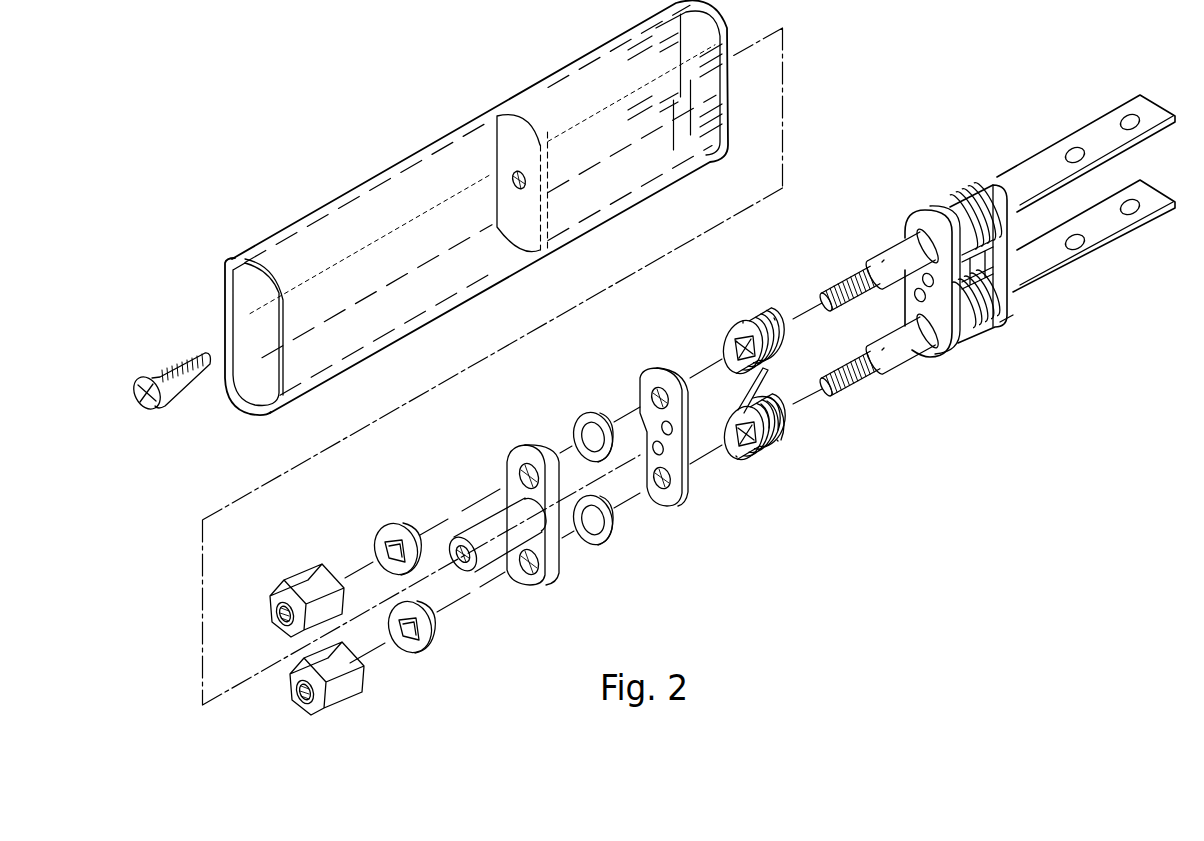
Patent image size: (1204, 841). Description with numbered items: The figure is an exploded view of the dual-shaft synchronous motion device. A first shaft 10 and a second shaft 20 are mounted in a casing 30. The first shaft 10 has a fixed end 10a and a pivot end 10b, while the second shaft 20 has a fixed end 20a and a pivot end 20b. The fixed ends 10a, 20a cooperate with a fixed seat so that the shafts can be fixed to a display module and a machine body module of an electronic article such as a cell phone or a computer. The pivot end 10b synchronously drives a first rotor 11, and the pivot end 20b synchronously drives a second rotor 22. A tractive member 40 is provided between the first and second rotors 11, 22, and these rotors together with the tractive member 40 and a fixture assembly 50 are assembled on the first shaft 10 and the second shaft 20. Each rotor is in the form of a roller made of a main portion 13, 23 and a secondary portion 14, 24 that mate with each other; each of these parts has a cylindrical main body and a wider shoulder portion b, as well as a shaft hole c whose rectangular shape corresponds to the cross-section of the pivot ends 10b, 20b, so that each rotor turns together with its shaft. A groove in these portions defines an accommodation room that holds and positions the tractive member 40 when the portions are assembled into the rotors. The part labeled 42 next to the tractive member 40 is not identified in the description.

The first shaft 10 is at (1002, 160).
The fixed end 10a is at (1090, 138).
The pivot end 10b is at (892, 253).
The first rotor 11 is at (738, 320).
The main portion 13 is at (700, 336).
The secondary portion 14 is at (810, 340).
The second shaft 20 is at (1030, 310).
The fixed end 20a is at (1084, 274).
The pivot end 20b is at (897, 353).
The second rotor 22 is at (752, 470).
The main portion 23 is at (725, 468).
The secondary portion 24 is at (810, 432).
The casing 30 is at (410, 143).
The tractive member 40 is at (745, 385).
The hook of connecting link 42 is at (790, 448).
The fixture assembly 50 is at (533, 424).
The shoulder portion b is at (757, 326).
The shaft hole c is at (722, 348).